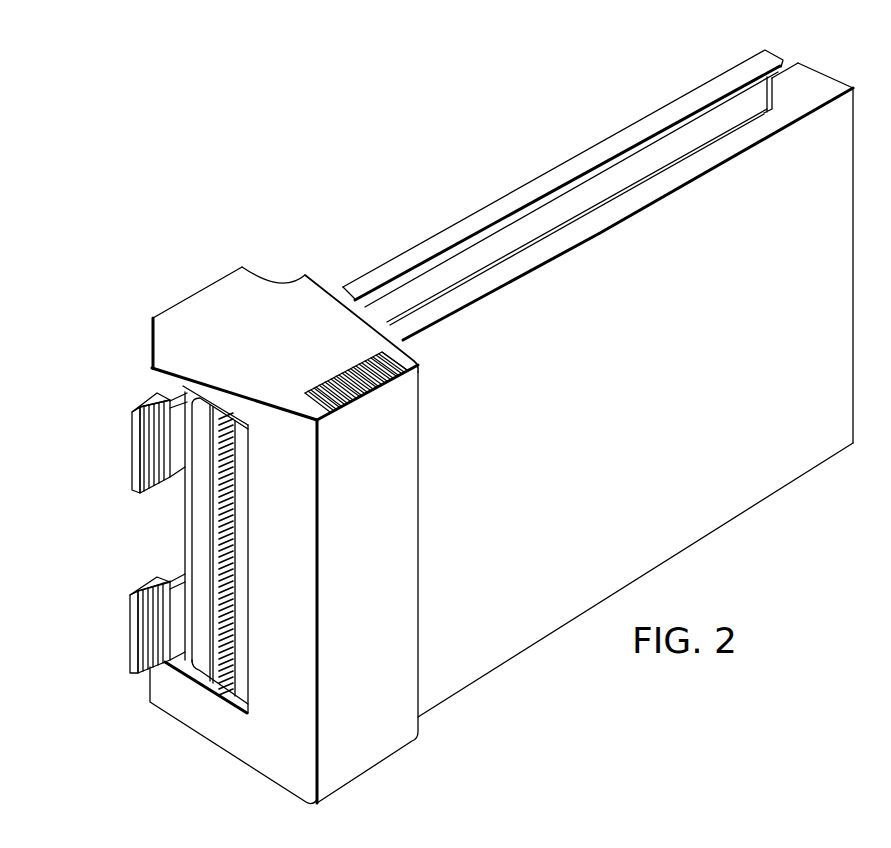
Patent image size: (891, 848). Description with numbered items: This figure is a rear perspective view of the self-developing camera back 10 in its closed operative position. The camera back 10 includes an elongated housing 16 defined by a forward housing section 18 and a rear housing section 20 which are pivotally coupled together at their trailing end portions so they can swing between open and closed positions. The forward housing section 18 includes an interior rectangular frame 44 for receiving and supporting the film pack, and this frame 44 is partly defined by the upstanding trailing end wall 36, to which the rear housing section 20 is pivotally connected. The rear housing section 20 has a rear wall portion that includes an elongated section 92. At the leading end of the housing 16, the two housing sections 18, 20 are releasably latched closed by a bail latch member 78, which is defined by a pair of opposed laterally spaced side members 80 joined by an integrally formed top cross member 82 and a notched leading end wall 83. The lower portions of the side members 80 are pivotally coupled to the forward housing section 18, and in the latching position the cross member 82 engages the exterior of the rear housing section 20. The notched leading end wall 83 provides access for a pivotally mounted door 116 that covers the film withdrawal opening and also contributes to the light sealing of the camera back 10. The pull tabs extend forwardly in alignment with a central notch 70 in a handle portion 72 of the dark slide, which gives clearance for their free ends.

The self-developing camera back 10 is at (227, 205).
The elongated housing 16 is at (345, 273).
The forward housing section 18 is at (717, 114).
The rear housing section 20 is at (820, 87).
The upstanding trailing end wall 36 is at (767, 56).
The interior rectangular frame 44 is at (583, 177).
The central notch 70 is at (162, 520).
The handle portion 72 is at (130, 395).
The bail latch member 78 is at (225, 327).
The side members 80 is at (283, 300).
The top cross member 82 is at (408, 560).
The notched leading end wall 83 is at (243, 738).
The elongated section 92 is at (749, 497).
The door 116 is at (230, 514).